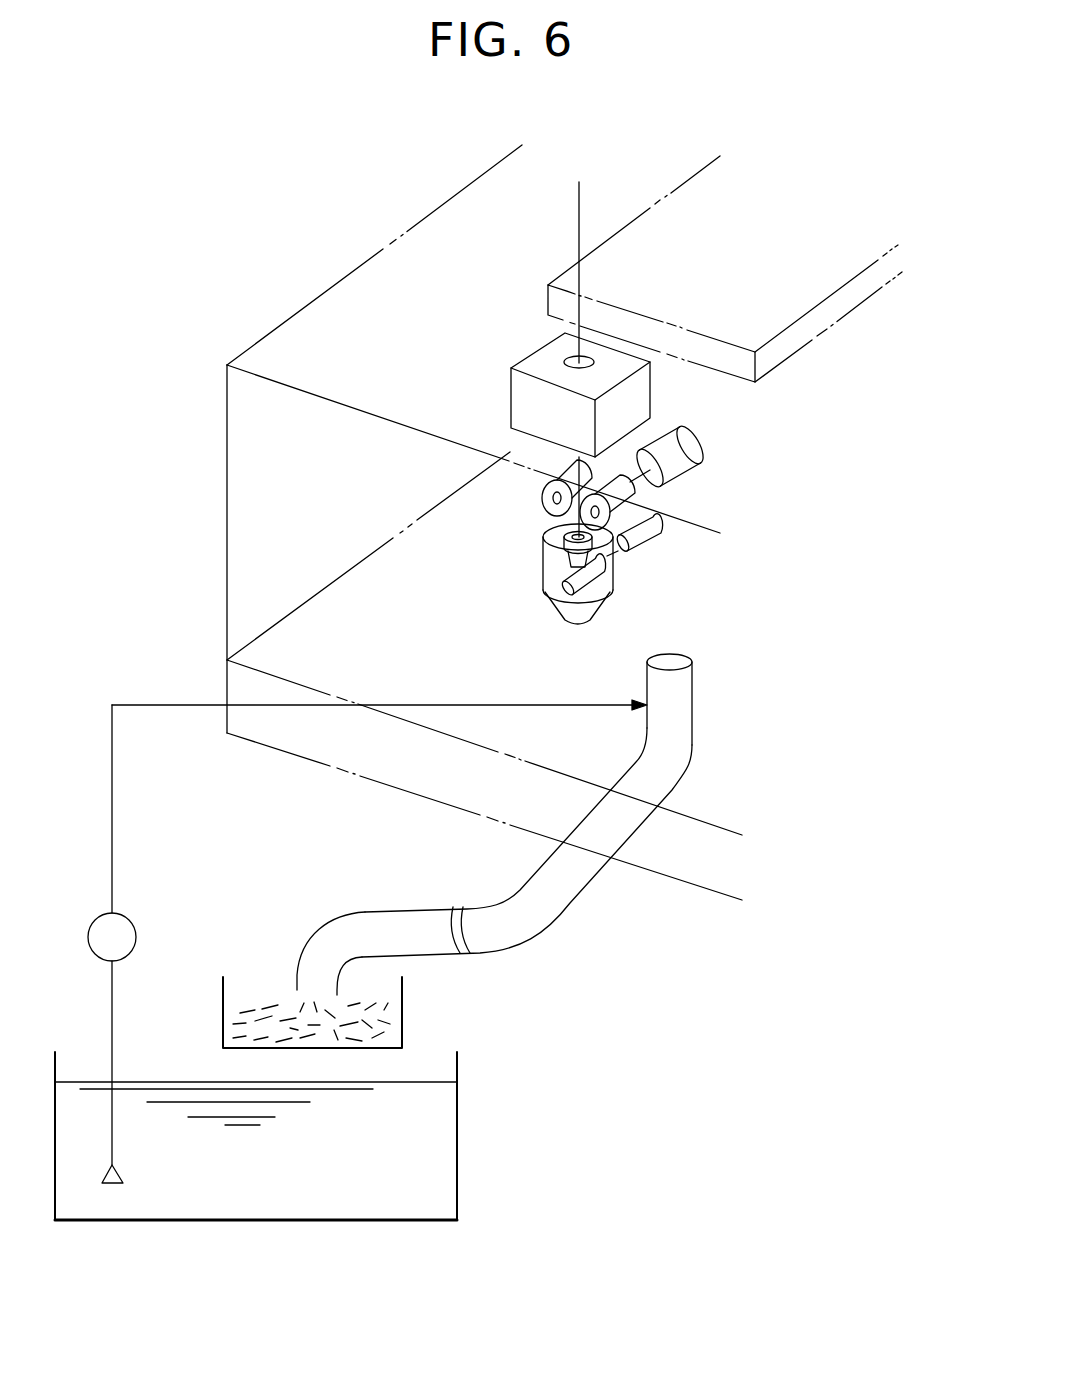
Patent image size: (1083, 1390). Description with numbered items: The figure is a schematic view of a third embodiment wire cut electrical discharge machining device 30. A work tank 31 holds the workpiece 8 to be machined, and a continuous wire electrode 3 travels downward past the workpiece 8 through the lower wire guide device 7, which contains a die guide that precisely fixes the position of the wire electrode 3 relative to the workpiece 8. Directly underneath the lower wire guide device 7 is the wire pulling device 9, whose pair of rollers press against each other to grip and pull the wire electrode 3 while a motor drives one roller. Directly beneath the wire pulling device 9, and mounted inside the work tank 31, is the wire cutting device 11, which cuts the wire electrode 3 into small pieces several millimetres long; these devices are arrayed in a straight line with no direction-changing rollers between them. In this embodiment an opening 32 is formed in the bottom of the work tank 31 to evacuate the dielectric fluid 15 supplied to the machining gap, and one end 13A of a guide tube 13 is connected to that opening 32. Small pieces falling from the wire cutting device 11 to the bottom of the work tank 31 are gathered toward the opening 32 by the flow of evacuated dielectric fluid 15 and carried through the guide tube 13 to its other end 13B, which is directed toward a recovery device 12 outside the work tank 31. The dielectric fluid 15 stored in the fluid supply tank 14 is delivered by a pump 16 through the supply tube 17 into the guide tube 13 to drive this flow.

The wire cut electrical discharge machining device 30 is at (408, 198).
The work tank 31 is at (310, 302).
The workpiece 8 is at (708, 190).
The wire electrode 3 is at (580, 192).
The lower wire guide device 7 is at (511, 390).
The wire pulling device 9 is at (526, 511).
The wire cutting device 11 is at (624, 581).
The opening 32 is at (659, 653).
The guide tube 13 is at (573, 907).
The one end of guide tube 13A is at (688, 657).
The other end of guide tube 13B is at (292, 985).
The supply tube 17 is at (112, 792).
The pump 16 is at (136, 940).
The recovery device 12 is at (402, 1010).
The fluid supply tank 14 is at (457, 1130).
The dielectric fluid 15 is at (267, 1195).